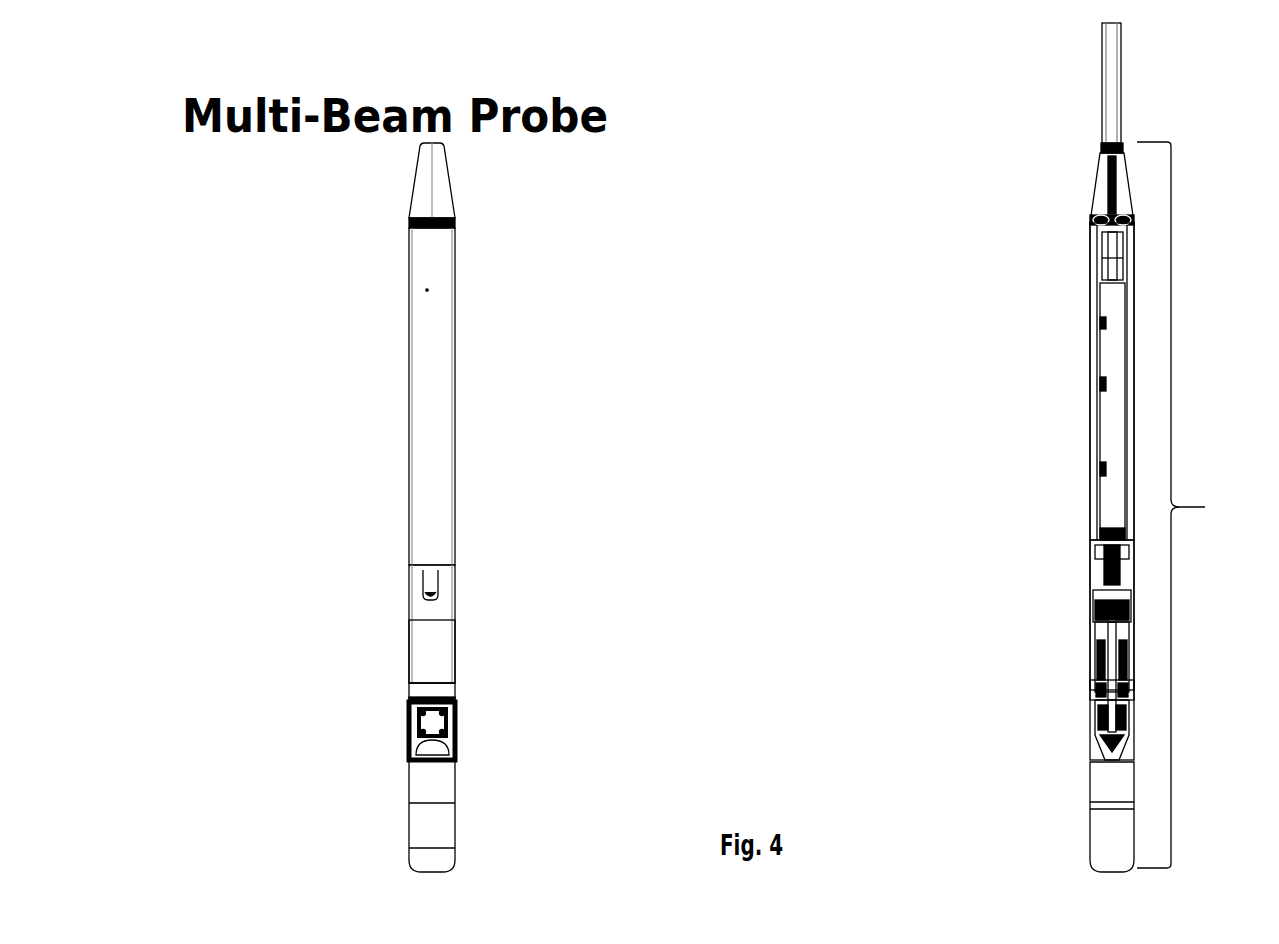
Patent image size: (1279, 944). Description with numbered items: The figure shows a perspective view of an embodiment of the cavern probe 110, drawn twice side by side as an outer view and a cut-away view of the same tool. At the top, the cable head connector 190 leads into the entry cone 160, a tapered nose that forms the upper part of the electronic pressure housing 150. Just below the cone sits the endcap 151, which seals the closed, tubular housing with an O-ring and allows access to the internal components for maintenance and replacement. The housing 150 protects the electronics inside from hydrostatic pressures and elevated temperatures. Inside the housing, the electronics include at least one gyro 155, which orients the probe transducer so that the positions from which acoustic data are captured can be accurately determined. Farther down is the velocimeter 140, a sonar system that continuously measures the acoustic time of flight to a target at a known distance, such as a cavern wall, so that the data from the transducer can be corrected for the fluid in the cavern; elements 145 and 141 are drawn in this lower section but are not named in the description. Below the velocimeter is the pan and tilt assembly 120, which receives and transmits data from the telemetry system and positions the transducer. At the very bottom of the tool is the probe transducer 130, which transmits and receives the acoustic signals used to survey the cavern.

The cavern probe 110 is at (1174, 505).
The cable head connector 190 is at (1097, 110).
The entry cone 160 is at (1072, 202).
The endcap 151 is at (1075, 232).
The electronic pressure housing 150 is at (1072, 407).
The gyro 155 is at (1097, 530).
The velocimeter 140 is at (1092, 578).
The sensor module 145 is at (1072, 635).
The lower ring 141 is at (1085, 690).
The pan and tilt assembly 120 is at (1085, 727).
The probe transducer 130 is at (1085, 805).